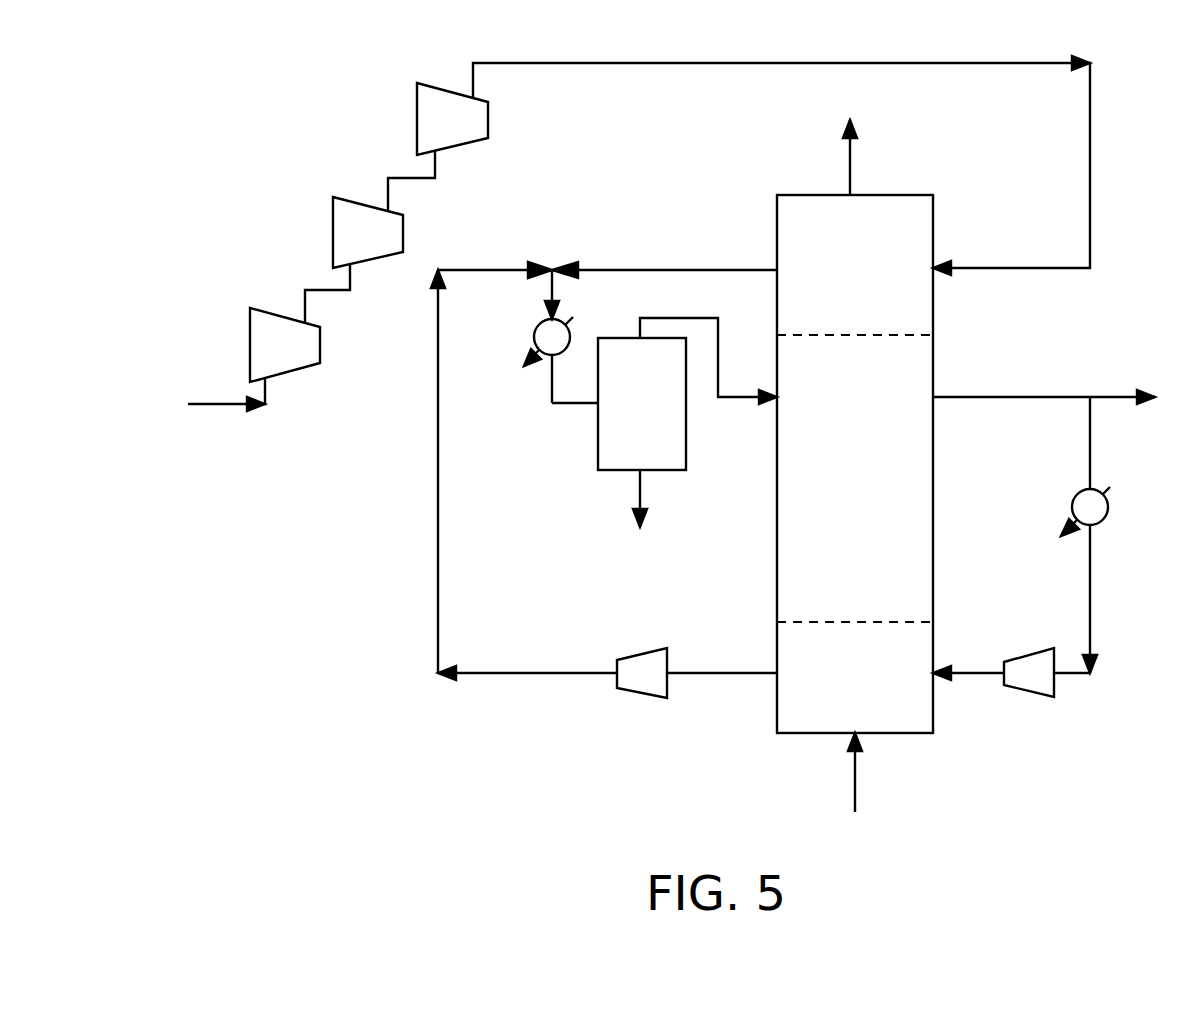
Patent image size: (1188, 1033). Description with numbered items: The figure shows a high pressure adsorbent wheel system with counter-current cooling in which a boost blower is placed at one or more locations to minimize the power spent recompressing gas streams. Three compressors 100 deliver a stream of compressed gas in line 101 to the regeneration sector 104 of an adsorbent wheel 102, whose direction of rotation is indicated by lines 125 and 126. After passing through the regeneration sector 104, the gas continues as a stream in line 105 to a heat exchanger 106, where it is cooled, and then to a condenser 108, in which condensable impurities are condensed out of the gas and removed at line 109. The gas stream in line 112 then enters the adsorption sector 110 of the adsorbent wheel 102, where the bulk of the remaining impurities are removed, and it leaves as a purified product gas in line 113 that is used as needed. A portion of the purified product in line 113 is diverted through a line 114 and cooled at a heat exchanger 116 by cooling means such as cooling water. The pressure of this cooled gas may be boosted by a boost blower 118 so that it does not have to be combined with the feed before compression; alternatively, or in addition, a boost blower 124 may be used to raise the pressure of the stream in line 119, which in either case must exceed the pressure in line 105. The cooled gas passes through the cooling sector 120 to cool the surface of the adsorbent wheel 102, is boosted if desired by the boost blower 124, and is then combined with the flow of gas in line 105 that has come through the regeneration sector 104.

The compressor 100 is at (474, 134).
The line 101 is at (218, 404).
The adsorbent wheel 102 is at (948, 505).
The regeneration sector 104 is at (879, 282).
The line 105 is at (696, 269).
The heat exchanger 106 is at (566, 337).
The condenser 108 is at (666, 416).
The line 109 is at (637, 492).
The adsorption sector 110 is at (879, 490).
The line 112 is at (548, 287).
The line 113 is at (990, 397).
The line 114 is at (1092, 420).
The heat exchanger 116 is at (1101, 517).
The boost blower 118 is at (1030, 682).
The line 119 is at (572, 672).
The cooling sector 120 is at (879, 688).
The boost blower 124 is at (640, 680).
The line 125 is at (848, 172).
The line 126 is at (857, 783).